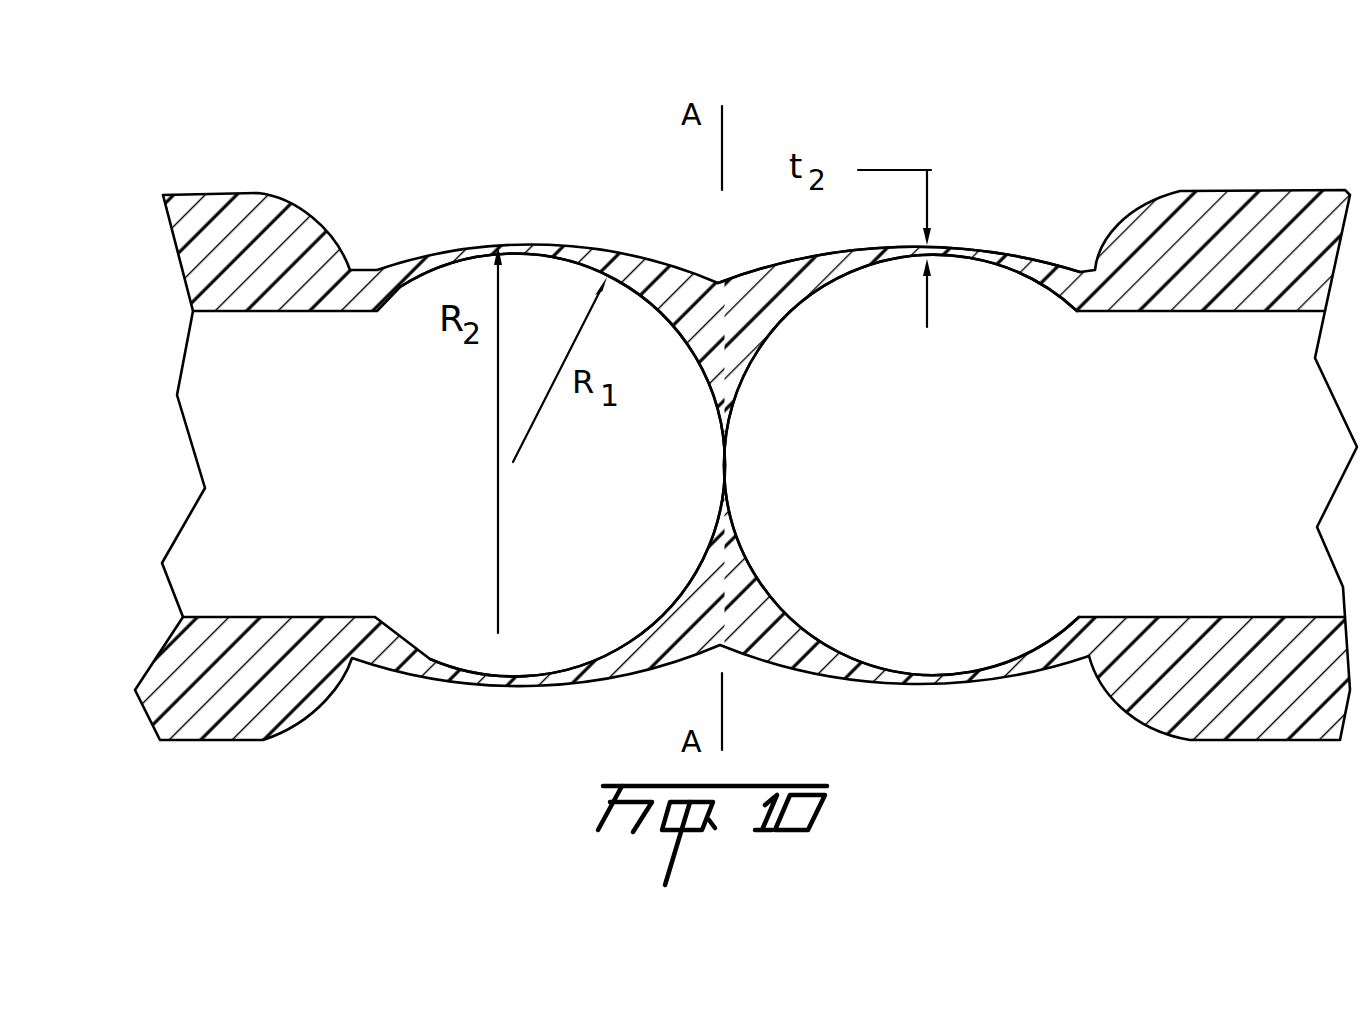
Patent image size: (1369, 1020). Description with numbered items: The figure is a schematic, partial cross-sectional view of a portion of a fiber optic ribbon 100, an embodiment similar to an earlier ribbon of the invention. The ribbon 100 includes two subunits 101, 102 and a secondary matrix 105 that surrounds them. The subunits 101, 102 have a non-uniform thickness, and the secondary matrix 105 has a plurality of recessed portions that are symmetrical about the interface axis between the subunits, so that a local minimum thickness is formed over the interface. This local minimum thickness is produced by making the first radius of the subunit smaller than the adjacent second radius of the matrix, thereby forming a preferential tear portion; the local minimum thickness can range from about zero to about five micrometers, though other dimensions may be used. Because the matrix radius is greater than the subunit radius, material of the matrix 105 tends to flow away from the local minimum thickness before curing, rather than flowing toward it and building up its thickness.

The ribbon 100 is at (240, 172).
The subunit 101 is at (447, 577).
The subunit 102 is at (868, 567).
The secondary matrix 105 is at (1032, 258).